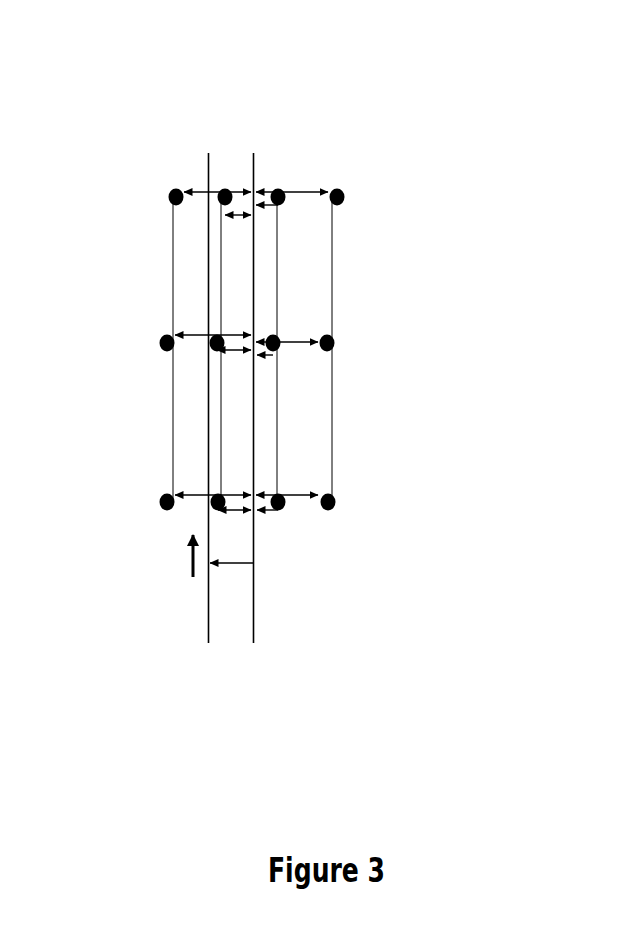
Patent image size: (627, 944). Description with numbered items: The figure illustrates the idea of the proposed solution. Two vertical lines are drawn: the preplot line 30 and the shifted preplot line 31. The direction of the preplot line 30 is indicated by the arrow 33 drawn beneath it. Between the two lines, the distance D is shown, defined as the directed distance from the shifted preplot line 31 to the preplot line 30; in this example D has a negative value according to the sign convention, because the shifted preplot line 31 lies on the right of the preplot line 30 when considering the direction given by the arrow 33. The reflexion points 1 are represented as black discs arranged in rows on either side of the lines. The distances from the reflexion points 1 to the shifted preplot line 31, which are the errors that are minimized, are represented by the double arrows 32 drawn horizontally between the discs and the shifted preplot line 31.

The reflexion points 1 is at (346, 197).
The preplot line 30 is at (207, 595).
The shifted preplot line 31 is at (256, 597).
The double arrows 32 is at (208, 325).
The arrow 33 is at (184, 555).
The distance D is at (228, 569).